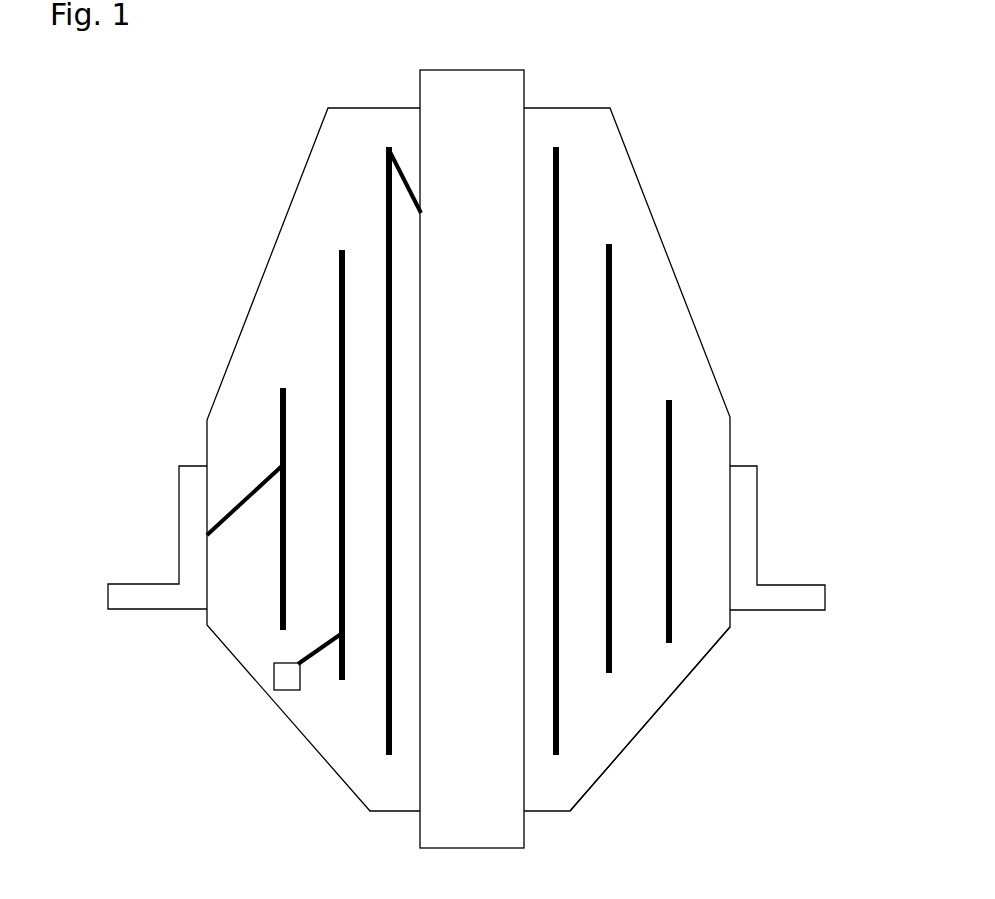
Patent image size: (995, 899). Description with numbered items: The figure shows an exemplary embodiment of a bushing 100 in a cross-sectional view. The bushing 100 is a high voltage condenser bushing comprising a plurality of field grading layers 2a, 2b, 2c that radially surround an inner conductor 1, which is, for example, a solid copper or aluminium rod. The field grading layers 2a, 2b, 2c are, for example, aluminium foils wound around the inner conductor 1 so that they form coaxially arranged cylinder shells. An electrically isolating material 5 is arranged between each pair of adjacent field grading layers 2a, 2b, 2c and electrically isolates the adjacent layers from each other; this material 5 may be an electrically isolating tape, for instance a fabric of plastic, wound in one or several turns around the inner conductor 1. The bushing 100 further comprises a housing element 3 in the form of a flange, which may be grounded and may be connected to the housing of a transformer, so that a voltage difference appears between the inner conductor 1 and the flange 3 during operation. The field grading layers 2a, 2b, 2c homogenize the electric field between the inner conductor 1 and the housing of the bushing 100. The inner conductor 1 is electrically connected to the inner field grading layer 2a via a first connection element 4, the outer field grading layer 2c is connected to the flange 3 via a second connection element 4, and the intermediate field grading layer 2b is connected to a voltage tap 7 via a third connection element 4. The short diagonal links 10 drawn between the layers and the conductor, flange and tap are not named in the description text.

The bushing 100 is at (740, 147).
The inner conductor 1 is at (515, 105).
The inner field grading layer 2a is at (557, 168).
The intermediate field grading layer 2b is at (610, 304).
The outer field grading layer 2c is at (670, 416).
The housing element 3 is at (757, 520).
The connection element 4 is at (398, 185).
The electrically isolating material 5 is at (576, 682).
The voltage tap 7 is at (275, 682).
The connecting element 10 is at (388, 146).